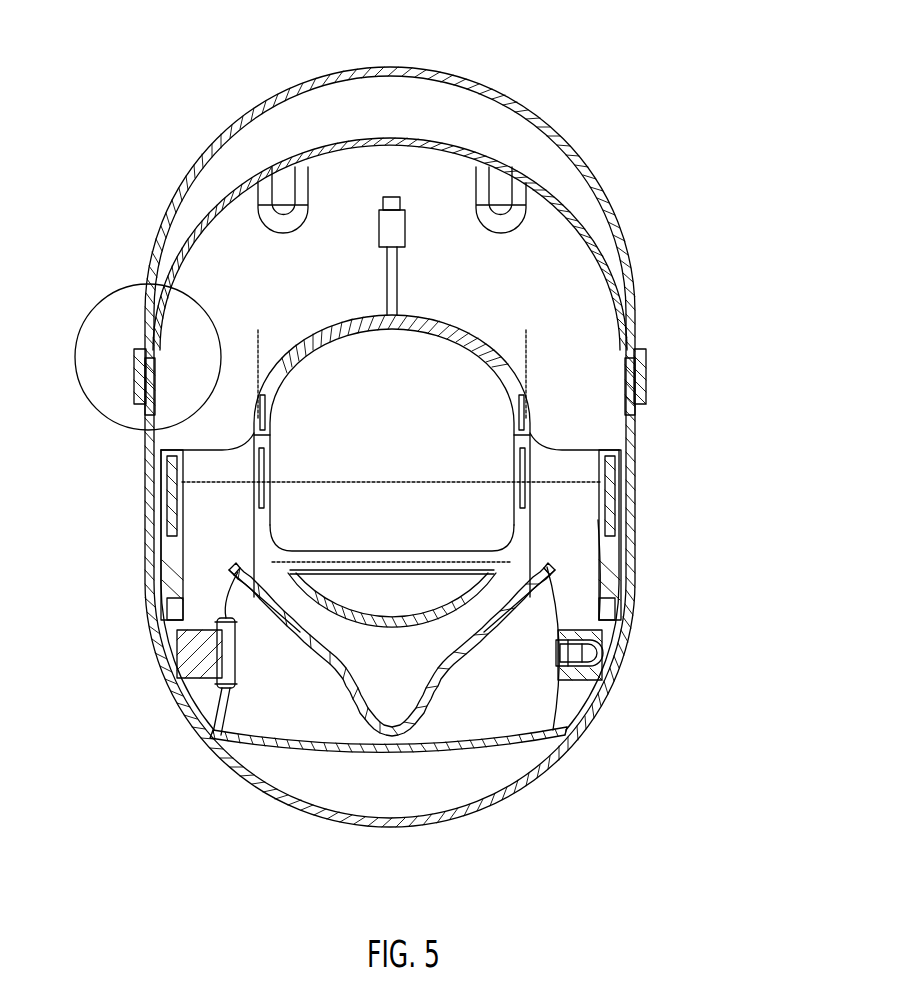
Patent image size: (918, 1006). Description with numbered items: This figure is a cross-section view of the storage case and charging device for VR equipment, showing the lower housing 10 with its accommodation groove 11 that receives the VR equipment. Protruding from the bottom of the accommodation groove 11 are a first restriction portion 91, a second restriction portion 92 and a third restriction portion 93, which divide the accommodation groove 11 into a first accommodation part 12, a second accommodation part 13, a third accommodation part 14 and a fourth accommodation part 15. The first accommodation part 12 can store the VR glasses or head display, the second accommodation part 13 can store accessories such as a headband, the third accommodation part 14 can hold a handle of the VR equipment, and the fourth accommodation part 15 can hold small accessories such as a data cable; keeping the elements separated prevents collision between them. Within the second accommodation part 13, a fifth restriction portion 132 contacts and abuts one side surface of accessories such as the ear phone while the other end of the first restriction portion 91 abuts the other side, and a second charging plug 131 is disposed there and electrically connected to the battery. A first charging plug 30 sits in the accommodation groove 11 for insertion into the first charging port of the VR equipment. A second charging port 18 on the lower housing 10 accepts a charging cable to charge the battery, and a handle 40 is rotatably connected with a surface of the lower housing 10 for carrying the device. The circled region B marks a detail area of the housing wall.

The lower housing 10 is at (583, 229).
The handle 40 is at (207, 152).
The fifth restriction portion 132 is at (287, 187).
The second charging plug 131 is at (393, 203).
The first restriction portion 91 is at (318, 340).
The second accommodation part 13 is at (533, 327).
The third accommodation part 14 is at (483, 458).
The accommodation groove 11 is at (720, 413).
The first accommodation part 12 is at (483, 610).
The fourth accommodation part 15 is at (450, 770).
The second charging port 18 is at (165, 490).
The second restriction portion 92 is at (288, 586).
The first charging plug 30 is at (600, 680).
The third restriction portion 93 is at (267, 743).
The detail region B is at (85, 313).